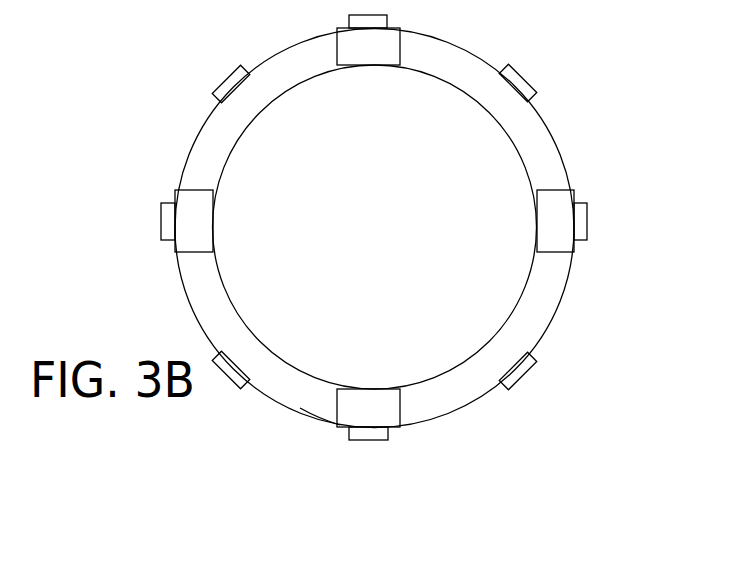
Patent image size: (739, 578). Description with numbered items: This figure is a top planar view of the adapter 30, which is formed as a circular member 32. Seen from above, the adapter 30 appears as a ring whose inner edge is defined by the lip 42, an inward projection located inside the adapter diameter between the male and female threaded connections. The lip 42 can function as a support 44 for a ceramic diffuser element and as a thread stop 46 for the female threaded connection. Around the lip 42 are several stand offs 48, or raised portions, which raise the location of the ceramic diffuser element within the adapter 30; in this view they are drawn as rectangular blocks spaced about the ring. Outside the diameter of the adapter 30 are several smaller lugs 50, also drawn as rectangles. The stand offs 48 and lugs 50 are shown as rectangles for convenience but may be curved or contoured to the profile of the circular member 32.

The adapter 30 is at (541, 426).
The circular member 32 is at (134, 208).
The lip 42 is at (535, 312).
The support 44 is at (423, 412).
The thread stop 46 is at (298, 402).
The stand offs 48 is at (363, 62).
The lugs 50 is at (530, 97).